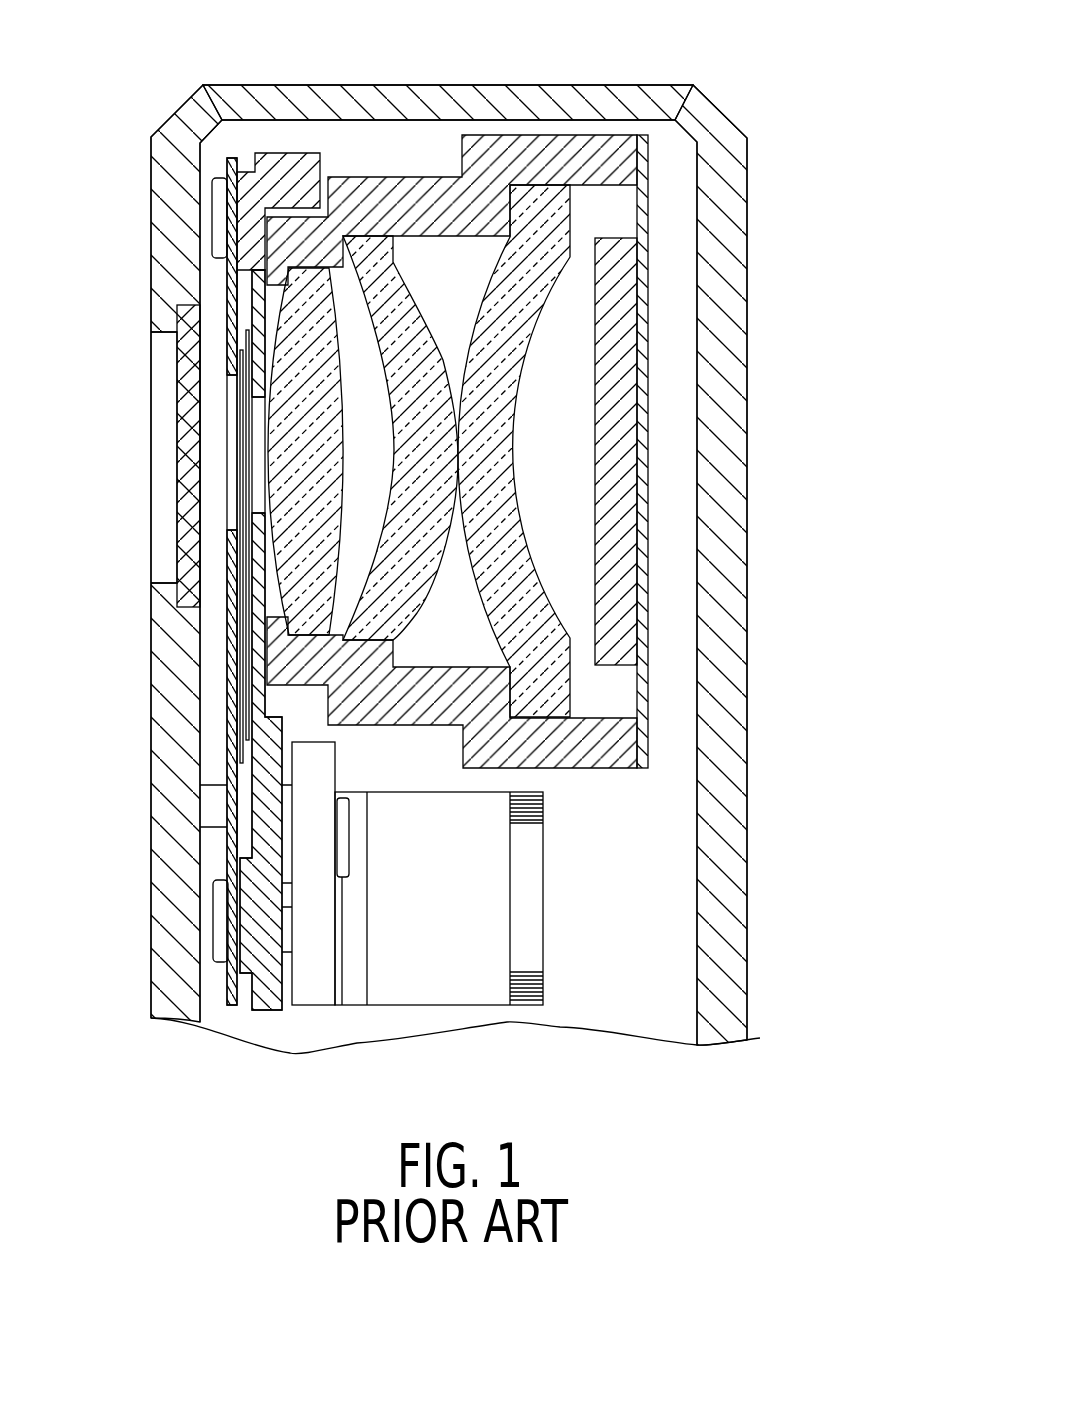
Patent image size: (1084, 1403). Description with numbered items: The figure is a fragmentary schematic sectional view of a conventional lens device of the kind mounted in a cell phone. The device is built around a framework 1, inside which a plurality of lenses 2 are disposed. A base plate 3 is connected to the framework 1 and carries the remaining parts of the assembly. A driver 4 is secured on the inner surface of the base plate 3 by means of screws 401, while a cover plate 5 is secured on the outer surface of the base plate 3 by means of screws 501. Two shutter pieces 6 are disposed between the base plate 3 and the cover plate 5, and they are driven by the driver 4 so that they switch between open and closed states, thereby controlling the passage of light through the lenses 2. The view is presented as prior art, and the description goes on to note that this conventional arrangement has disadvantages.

The framework 1 is at (424, 170).
The lenses 2 is at (510, 343).
The base plate 3 is at (290, 150).
The driver 4 is at (412, 1018).
The screws 401 is at (343, 845).
The cover plate 5 is at (214, 292).
The screws 501 is at (222, 217).
The shutter pieces 6 is at (241, 443).